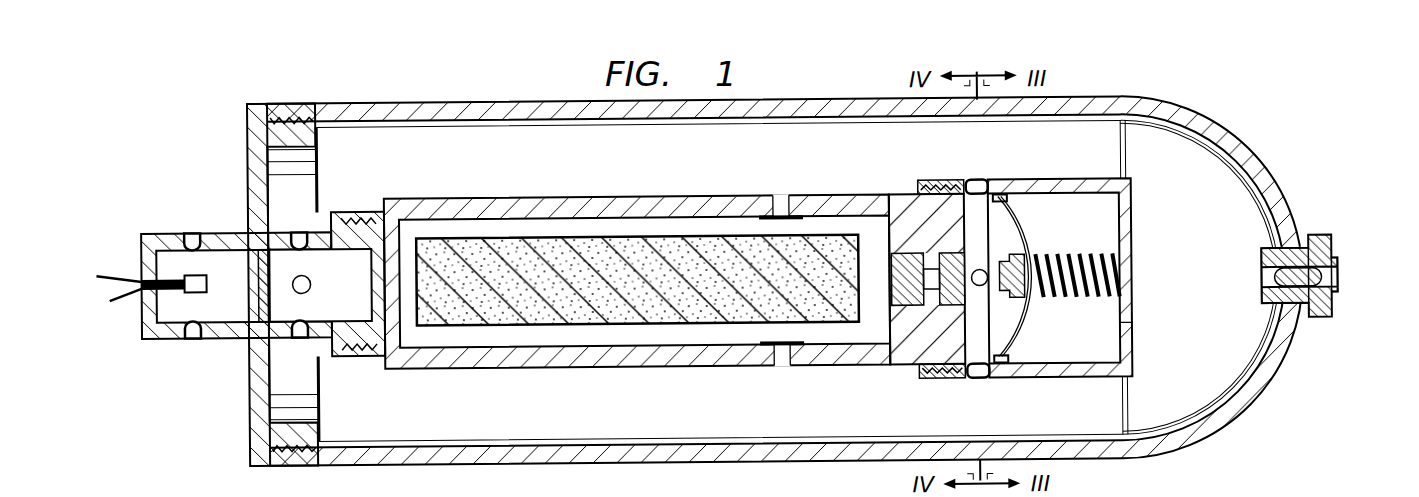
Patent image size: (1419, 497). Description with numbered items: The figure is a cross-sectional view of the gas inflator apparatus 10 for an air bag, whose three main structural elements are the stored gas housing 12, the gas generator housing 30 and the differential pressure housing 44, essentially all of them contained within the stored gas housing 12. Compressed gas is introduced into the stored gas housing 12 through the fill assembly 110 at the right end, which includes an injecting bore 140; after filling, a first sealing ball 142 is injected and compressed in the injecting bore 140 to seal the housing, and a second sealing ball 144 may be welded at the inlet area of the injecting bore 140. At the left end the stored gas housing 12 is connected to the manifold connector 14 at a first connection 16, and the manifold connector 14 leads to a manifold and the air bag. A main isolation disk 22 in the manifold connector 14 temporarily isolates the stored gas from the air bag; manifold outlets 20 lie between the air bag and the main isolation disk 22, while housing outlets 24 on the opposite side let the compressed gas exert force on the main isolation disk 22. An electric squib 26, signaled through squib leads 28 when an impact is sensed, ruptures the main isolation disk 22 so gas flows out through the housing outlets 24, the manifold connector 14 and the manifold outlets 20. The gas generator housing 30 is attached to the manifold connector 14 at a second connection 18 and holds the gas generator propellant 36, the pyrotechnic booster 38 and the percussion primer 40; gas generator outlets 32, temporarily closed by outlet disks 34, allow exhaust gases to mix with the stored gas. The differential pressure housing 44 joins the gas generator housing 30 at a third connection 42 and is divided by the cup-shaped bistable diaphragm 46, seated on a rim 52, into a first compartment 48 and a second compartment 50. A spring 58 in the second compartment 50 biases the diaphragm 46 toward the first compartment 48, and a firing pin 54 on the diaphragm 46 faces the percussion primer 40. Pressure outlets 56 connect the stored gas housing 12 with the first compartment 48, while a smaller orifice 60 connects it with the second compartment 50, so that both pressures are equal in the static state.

The gas inflator apparatus 10 is at (1276, 105).
The stored gas housing 12 is at (498, 104).
The manifold connector 14 is at (246, 152).
The first connection 16 is at (281, 106).
The second connection 18 is at (359, 207).
The manifold outlets 20 is at (192, 233).
The main isolation disk 22 is at (257, 286).
The housing outlets 24 is at (302, 233).
The electric squib 26 is at (205, 280).
The squib leads 28 is at (126, 268).
The gas generator housing 30 is at (632, 200).
The gas generator outlets 32 is at (781, 200).
The outlet disks 34 is at (758, 221).
The gas generator propellant 36 is at (615, 292).
The pyrotechnic booster 38 is at (885, 236).
The percussion primer 40 is at (977, 275).
The third connection 42 is at (929, 181).
The differential pressure housing 44 is at (1066, 186).
The diaphragm 46 is at (1026, 232).
The first compartment 48 is at (972, 342).
The second compartment 50 is at (1064, 343).
The rim 52 is at (1008, 204).
The firing pin 54 is at (1004, 275).
The pressure outlets 56 is at (977, 186).
The spring 58 is at (1082, 261).
The orifice 60 is at (1132, 330).
The fill assembly 110 is at (1330, 248).
The injecting bore 140 is at (1260, 276).
The first sealing ball 142 is at (1282, 308).
The second sealing ball 144 is at (1338, 290).